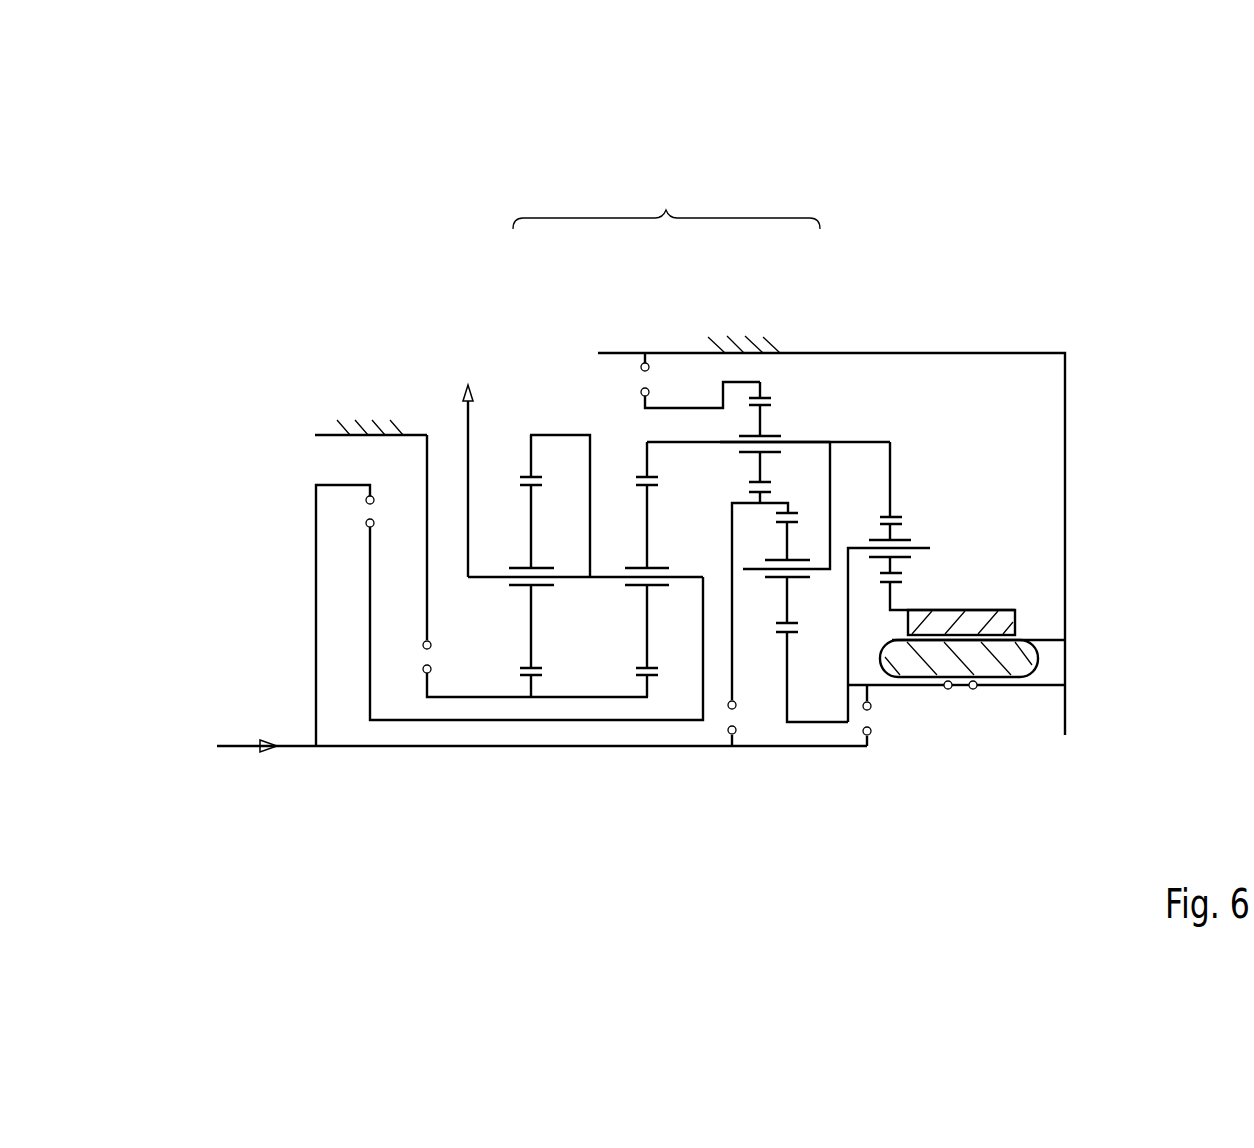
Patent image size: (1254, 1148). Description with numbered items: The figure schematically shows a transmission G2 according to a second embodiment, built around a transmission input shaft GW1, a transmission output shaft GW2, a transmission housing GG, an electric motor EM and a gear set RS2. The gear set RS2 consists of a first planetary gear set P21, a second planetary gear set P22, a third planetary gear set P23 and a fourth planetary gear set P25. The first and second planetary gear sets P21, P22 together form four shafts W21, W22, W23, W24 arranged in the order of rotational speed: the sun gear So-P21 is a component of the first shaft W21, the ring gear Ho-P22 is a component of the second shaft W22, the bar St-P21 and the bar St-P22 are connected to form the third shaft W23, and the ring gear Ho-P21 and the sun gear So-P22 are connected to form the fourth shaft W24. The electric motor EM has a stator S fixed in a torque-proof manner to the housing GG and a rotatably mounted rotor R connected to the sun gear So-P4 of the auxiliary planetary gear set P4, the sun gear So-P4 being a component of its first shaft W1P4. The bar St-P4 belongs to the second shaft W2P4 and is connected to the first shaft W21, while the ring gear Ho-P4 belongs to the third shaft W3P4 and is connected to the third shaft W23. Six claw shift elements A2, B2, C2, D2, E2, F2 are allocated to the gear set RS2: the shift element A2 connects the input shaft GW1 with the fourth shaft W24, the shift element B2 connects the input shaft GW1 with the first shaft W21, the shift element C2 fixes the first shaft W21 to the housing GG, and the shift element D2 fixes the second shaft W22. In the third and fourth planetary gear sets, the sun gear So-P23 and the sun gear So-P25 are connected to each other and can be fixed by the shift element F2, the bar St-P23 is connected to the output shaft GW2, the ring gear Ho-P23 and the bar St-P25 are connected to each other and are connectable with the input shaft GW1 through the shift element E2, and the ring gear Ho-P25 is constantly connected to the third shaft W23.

The transmission G2 is at (285, 233).
The transmission housing GG is at (1045, 353).
The transmission input shaft GW1 is at (238, 748).
The transmission output shaft GW2 is at (465, 426).
The gear set RS2 is at (666, 199).
The third planetary gear set P23 is at (469, 481).
The ring gear of the third planetary gear set Ho-P23 is at (522, 477).
The bar of the third planetary gear set St-P23 is at (487, 582).
The sun gear of the third planetary gear set So-P23 is at (523, 673).
The fourth planetary gear set P25 is at (575, 481).
The ring gear of the fourth planetary gear set Ho-P25 is at (637, 477).
The bar of the fourth planetary gear set St-P25 is at (607, 582).
The sun gear of the fourth planetary gear set So-P25 is at (643, 673).
The second planetary gear set P22 is at (830, 481).
The ring gear of the second planetary gear set Ho-P22 is at (762, 397).
The bar of the second planetary gear set St-P22 is at (800, 442).
The sun gear of the second planetary gear set So-P22 is at (757, 493).
The first planetary gear set P21 is at (909, 481).
The ring gear of the first planetary gear set Ho-P21 is at (790, 512).
The bar of the first planetary gear set St-P21 is at (817, 572).
The sun gear of the first planetary gear set So-P21 is at (779, 636).
The auxiliary planetary gear set P4 is at (1043, 543).
The ring gear of the auxiliary planetary gear set Ho-P4 is at (893, 515).
The bar of the auxiliary planetary gear set St-P4 is at (915, 545).
The sun gear of the auxiliary planetary gear set So-P4 is at (883, 585).
The first shaft W21 is at (930, 685).
The second shaft W22 is at (685, 407).
The third shaft W23 is at (893, 450).
The fourth shaft W24 is at (779, 634).
The first shaft of the auxiliary planetary gear set W1P4 is at (893, 608).
The second shaft of the auxiliary planetary gear set W2P4 is at (931, 550).
The third shaft of the auxiliary planetary gear set W3P4 is at (893, 477).
The shift element A2 is at (758, 624).
The shift element B2 is at (879, 715).
The shift element C2 is at (960, 699).
The shift element D2 is at (700, 380).
The shift element E2 is at (509, 615).
The shift element F2 is at (535, 566).
The electric motor EM is at (1035, 670).
The rotor R is at (1012, 614).
The stator S is at (1038, 667).